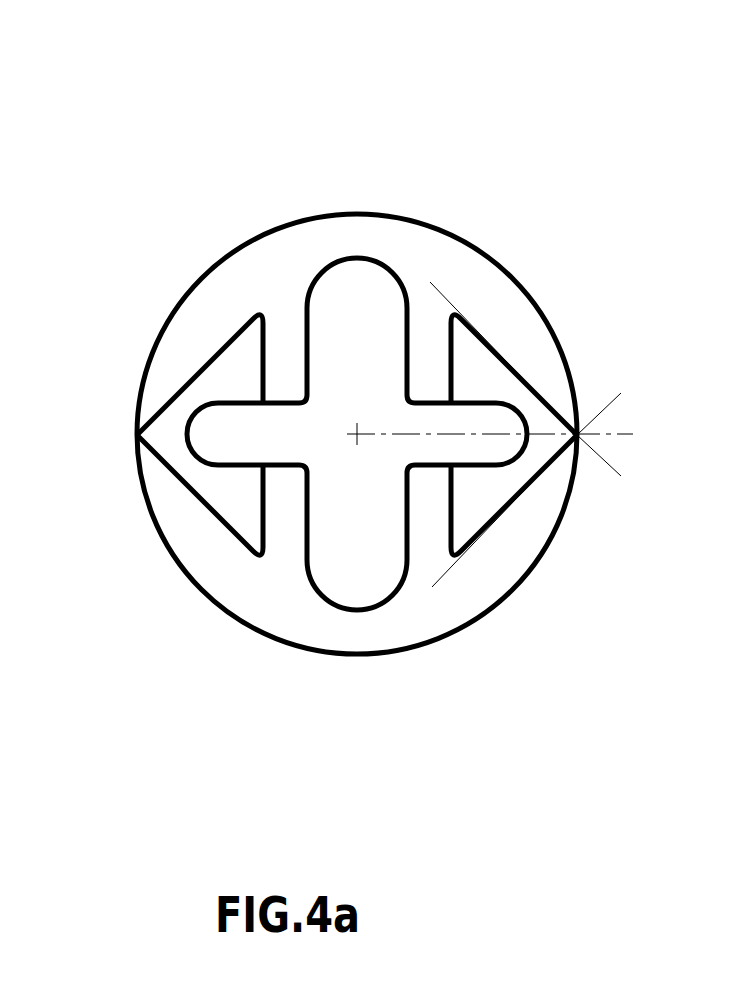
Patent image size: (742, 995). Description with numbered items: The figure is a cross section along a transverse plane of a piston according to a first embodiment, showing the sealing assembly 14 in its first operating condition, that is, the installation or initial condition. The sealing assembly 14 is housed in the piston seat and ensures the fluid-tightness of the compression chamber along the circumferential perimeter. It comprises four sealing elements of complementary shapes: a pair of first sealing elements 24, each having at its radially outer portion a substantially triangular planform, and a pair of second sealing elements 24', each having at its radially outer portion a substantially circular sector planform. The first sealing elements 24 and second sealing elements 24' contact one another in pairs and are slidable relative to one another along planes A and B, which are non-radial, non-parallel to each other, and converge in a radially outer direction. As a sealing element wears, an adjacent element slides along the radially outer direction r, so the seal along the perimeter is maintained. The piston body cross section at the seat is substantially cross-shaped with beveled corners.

The sealing assembly 14 is at (376, 207).
The first sealing element 24 is at (347, 434).
The second sealing element 24' is at (410, 502).
The plane A is at (603, 457).
The plane B is at (602, 412).
The radially outer direction r is at (623, 438).